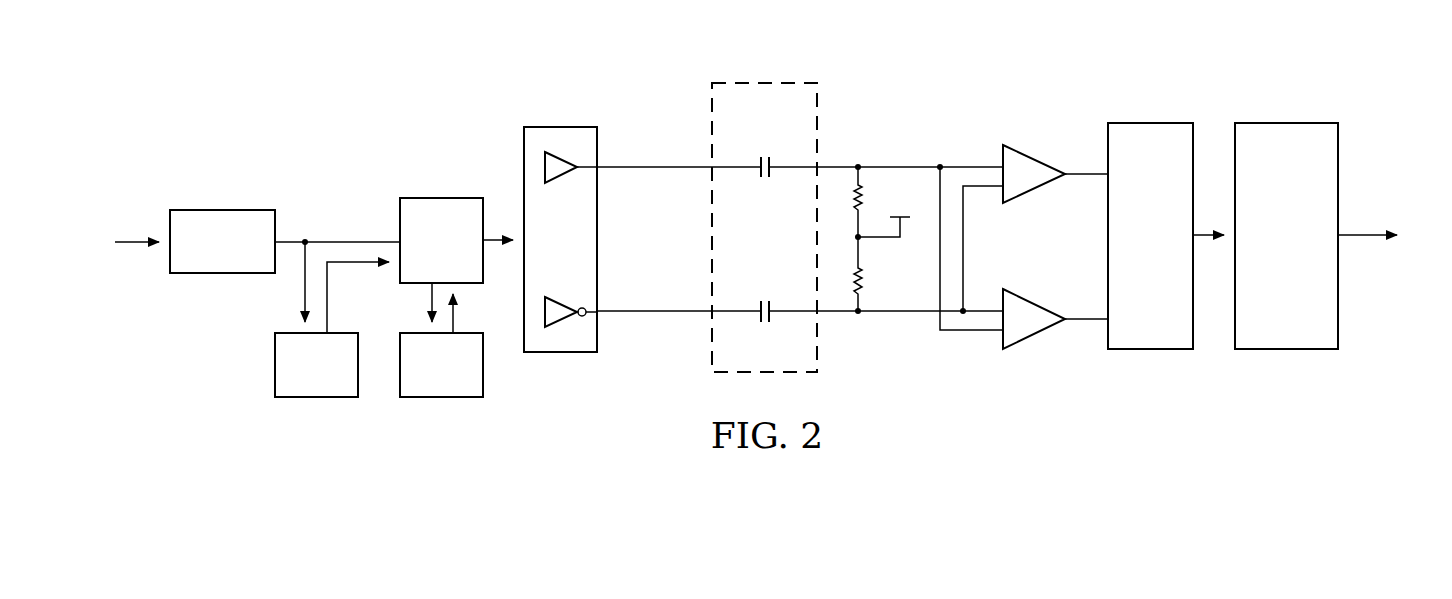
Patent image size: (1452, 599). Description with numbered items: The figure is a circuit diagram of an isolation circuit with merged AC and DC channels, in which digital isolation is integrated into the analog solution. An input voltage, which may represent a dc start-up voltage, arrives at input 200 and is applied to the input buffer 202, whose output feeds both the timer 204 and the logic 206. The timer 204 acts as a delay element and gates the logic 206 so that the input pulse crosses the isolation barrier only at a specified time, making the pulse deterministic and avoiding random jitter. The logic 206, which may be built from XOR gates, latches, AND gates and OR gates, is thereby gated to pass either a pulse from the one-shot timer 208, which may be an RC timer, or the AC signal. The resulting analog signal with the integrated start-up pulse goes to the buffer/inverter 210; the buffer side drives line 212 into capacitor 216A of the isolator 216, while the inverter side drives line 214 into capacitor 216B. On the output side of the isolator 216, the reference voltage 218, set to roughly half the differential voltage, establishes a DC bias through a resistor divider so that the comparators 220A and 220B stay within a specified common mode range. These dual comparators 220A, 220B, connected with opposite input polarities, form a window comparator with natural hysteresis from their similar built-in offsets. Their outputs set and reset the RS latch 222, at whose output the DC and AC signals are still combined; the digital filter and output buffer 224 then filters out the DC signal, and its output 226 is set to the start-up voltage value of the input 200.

The input 200 is at (138, 247).
The input buffer 202 is at (223, 210).
The timer 204 is at (317, 397).
The logic 206 is at (440, 198).
The one-shot timer 208 is at (443, 397).
The buffer/inverter 210 is at (558, 114).
The TXOUTA signal line 212 is at (661, 170).
The reference voltage 214 is at (661, 315).
The isolator 216 is at (737, 72).
The capacitor 216A is at (763, 183).
The capacitor 216B is at (764, 297).
The reference voltage 218 is at (862, 240).
The window comparator 220A is at (1035, 155).
The window comparator 220B is at (1037, 334).
The RS latch 222 is at (1152, 350).
The digital filter and output buffer 224 is at (1290, 350).
The output 226 is at (1373, 237).